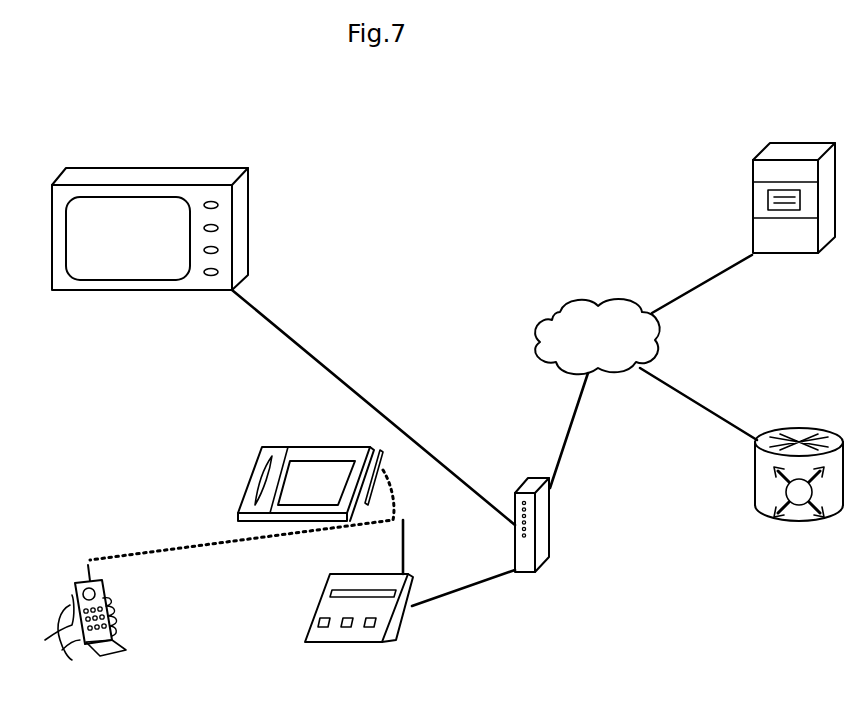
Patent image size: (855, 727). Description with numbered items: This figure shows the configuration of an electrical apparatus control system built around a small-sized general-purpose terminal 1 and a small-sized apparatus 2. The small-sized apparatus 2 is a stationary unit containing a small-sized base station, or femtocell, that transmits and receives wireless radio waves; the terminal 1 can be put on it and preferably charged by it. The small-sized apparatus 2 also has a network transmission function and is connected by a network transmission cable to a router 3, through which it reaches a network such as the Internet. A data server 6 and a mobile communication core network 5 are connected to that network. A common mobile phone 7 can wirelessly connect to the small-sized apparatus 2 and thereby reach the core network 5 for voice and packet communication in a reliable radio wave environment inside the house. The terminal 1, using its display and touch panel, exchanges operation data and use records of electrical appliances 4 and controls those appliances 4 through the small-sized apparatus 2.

The small-sized general-purpose terminal 1 is at (252, 478).
The small-sized apparatus 2 is at (315, 612).
The router 3 is at (549, 530).
The electrical appliances 4 is at (244, 253).
The mobile communication core network 5 is at (785, 522).
The data server 6 is at (776, 253).
The mobile phone 7 is at (108, 652).